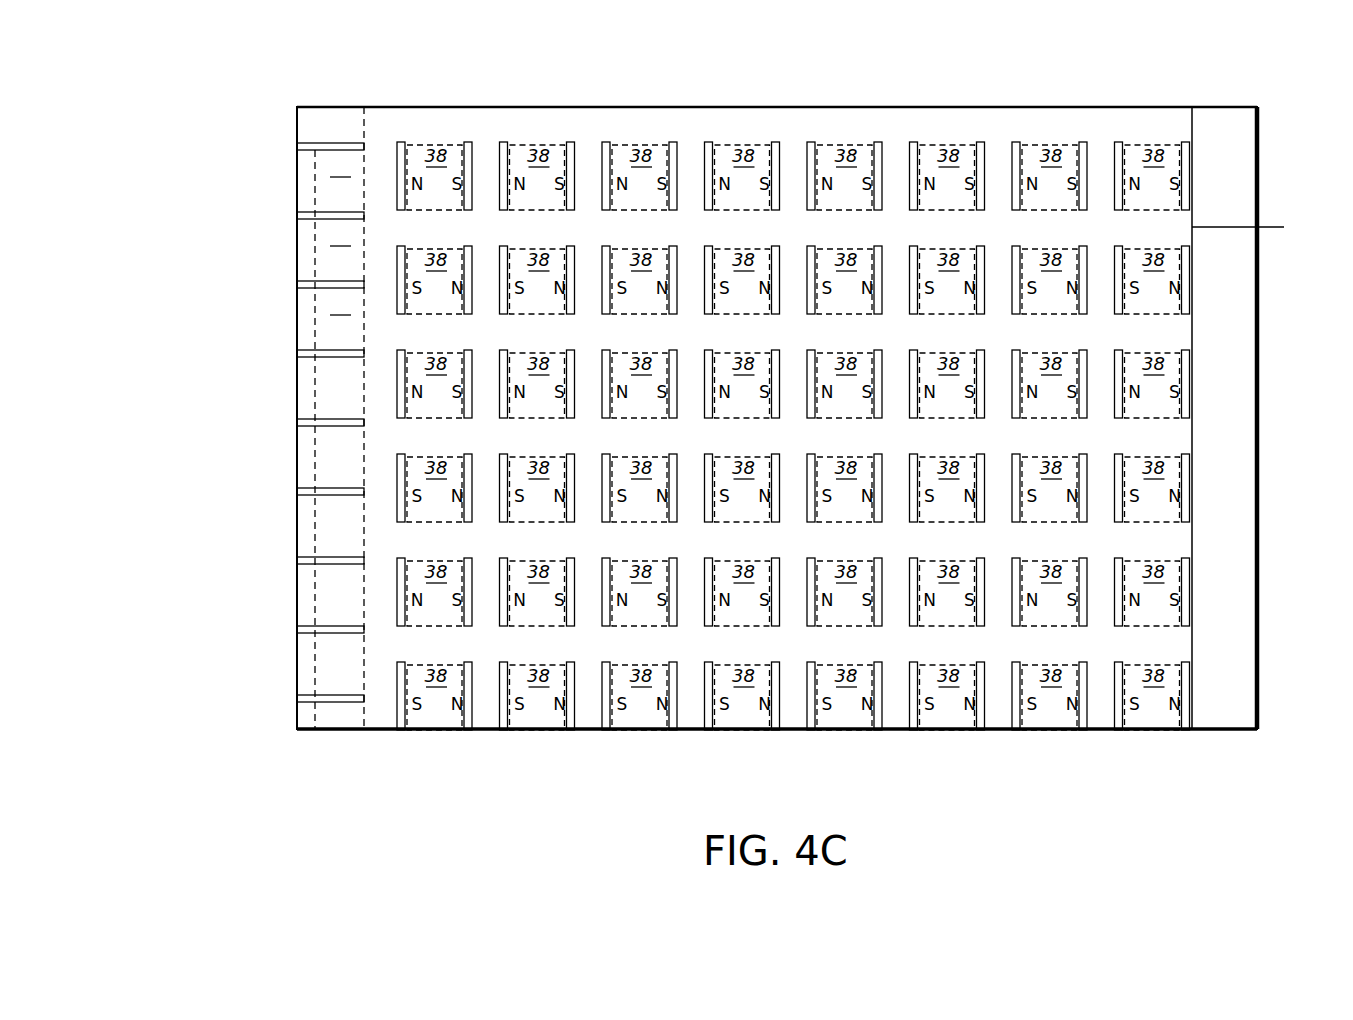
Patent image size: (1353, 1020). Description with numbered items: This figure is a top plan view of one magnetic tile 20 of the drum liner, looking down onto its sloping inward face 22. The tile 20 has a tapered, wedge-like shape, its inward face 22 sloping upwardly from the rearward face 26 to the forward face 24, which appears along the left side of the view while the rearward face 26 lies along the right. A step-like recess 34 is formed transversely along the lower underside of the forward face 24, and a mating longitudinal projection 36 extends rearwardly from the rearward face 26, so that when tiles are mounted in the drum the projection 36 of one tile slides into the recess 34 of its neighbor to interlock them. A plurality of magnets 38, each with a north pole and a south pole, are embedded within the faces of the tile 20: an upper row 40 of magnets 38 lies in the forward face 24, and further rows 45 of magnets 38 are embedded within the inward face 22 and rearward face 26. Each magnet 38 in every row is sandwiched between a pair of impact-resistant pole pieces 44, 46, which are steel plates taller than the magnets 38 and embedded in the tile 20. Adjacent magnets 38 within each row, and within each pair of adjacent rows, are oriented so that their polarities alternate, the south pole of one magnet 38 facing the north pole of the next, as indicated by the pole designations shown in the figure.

The magnetic tile 20 is at (253, 436).
The inward face 22 is at (776, 443).
The forward face 24 is at (292, 425).
The rearward face 26 is at (1256, 418).
The step-like recess 34 is at (360, 122).
The longitudinal projection 36 is at (1224, 703).
The magnet 38 is at (794, 437).
The upper row of magnets 40 is at (340, 708).
The pole piece 44 is at (303, 144).
The row of magnets 45 is at (440, 105).
The pole piece 46 is at (303, 213).